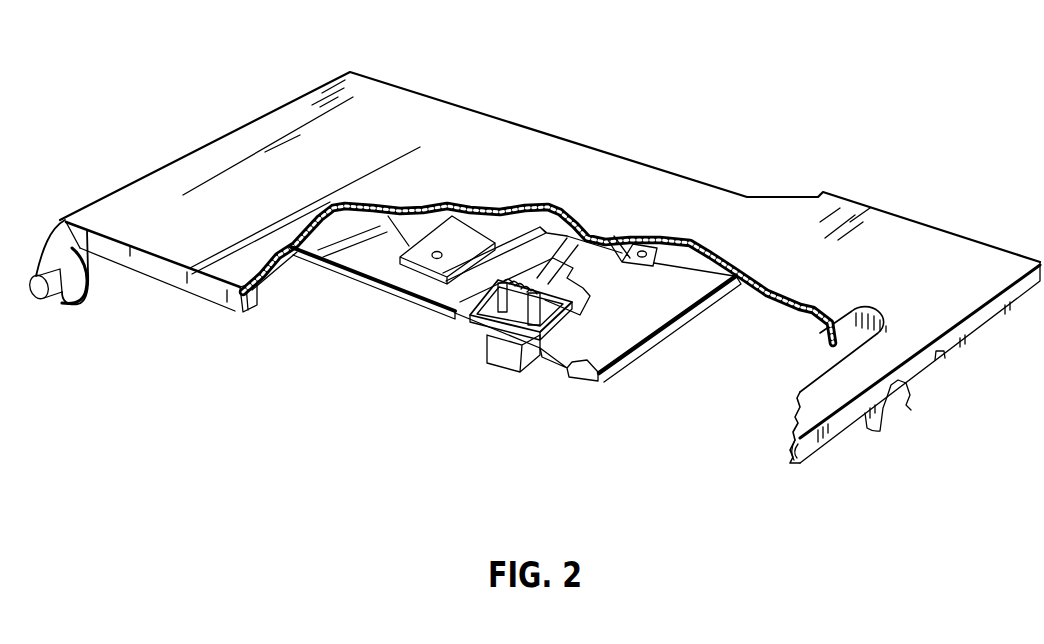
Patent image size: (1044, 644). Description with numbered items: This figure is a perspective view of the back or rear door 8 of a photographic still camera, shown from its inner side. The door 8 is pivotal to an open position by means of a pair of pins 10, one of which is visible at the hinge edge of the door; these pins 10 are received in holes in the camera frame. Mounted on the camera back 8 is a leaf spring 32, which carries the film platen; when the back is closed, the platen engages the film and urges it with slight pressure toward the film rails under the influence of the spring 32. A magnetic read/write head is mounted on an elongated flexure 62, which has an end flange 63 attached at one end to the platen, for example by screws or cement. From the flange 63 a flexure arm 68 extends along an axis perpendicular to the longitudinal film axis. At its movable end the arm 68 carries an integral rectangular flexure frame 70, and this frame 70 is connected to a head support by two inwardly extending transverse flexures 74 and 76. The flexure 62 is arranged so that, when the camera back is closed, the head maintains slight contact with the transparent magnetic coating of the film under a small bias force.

The back or rear door 8 is at (533, 243).
The pins 10 is at (58, 305).
The leaf spring 32 is at (503, 255).
The flexure 62 is at (590, 296).
The end flange 63 is at (665, 262).
The flexure arm 68 is at (660, 244).
The flexure frame 70 is at (548, 314).
The transverse flexure 74 is at (548, 348).
The transverse flexure 76 is at (532, 309).